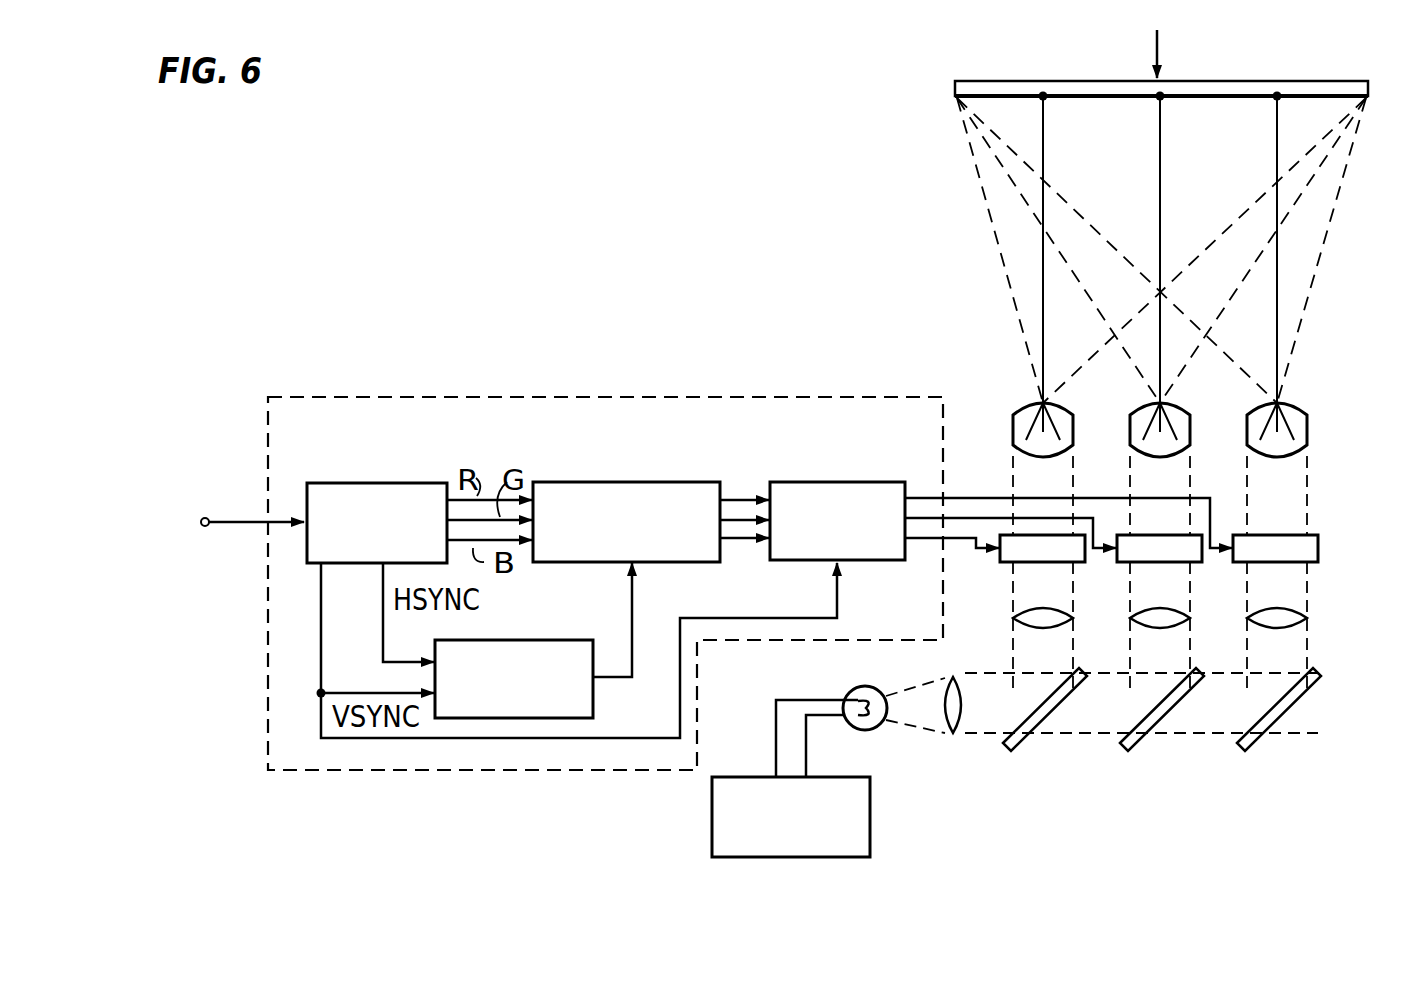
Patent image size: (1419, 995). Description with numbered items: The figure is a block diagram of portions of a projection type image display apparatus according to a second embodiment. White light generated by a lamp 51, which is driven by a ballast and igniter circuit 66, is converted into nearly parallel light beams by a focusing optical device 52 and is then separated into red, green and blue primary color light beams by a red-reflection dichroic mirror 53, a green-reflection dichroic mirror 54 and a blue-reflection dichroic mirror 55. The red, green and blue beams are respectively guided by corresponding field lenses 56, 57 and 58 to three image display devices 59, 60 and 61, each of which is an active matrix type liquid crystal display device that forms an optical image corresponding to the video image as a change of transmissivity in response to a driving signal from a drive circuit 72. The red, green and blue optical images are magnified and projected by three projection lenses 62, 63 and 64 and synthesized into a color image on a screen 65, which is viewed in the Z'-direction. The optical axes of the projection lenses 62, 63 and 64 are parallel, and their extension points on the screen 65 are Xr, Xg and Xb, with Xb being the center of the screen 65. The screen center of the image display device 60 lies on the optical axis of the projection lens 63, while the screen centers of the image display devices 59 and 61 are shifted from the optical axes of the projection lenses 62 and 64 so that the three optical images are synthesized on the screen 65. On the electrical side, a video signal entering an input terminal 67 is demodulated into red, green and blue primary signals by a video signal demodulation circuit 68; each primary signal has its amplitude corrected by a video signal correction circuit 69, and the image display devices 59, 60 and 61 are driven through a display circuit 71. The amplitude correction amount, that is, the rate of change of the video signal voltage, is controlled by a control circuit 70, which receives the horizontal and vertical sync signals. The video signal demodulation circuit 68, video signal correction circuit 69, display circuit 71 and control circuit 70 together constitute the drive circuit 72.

The lamp 51 is at (862, 688).
The focusing optical device 52 is at (957, 735).
The red-reflection dichroic mirror 53 is at (1040, 735).
The green-reflection dichroic mirror 54 is at (1155, 735).
The blue-reflection dichroic mirror 55 is at (1270, 735).
The field lens 56 is at (1027, 630).
The field lens 57 is at (1144, 630).
The field lens 58 is at (1261, 630).
The image display device 59 is at (1022, 565).
The image display device 60 is at (1139, 565).
The image display device 61 is at (1256, 565).
The projection lens 62 is at (1073, 432).
The projection lens 63 is at (1190, 432).
The projection lens 64 is at (1307, 432).
The screen 65 is at (1297, 81).
The ballast and igniter circuit 66 is at (838, 777).
The input terminal 67 is at (208, 518).
The video signal demodulation circuit 68 is at (392, 483).
The video signal correction circuit 69 is at (667, 482).
The control circuit 70 is at (538, 640).
The display circuit 71 is at (850, 482).
The drive circuit 72 is at (583, 392).